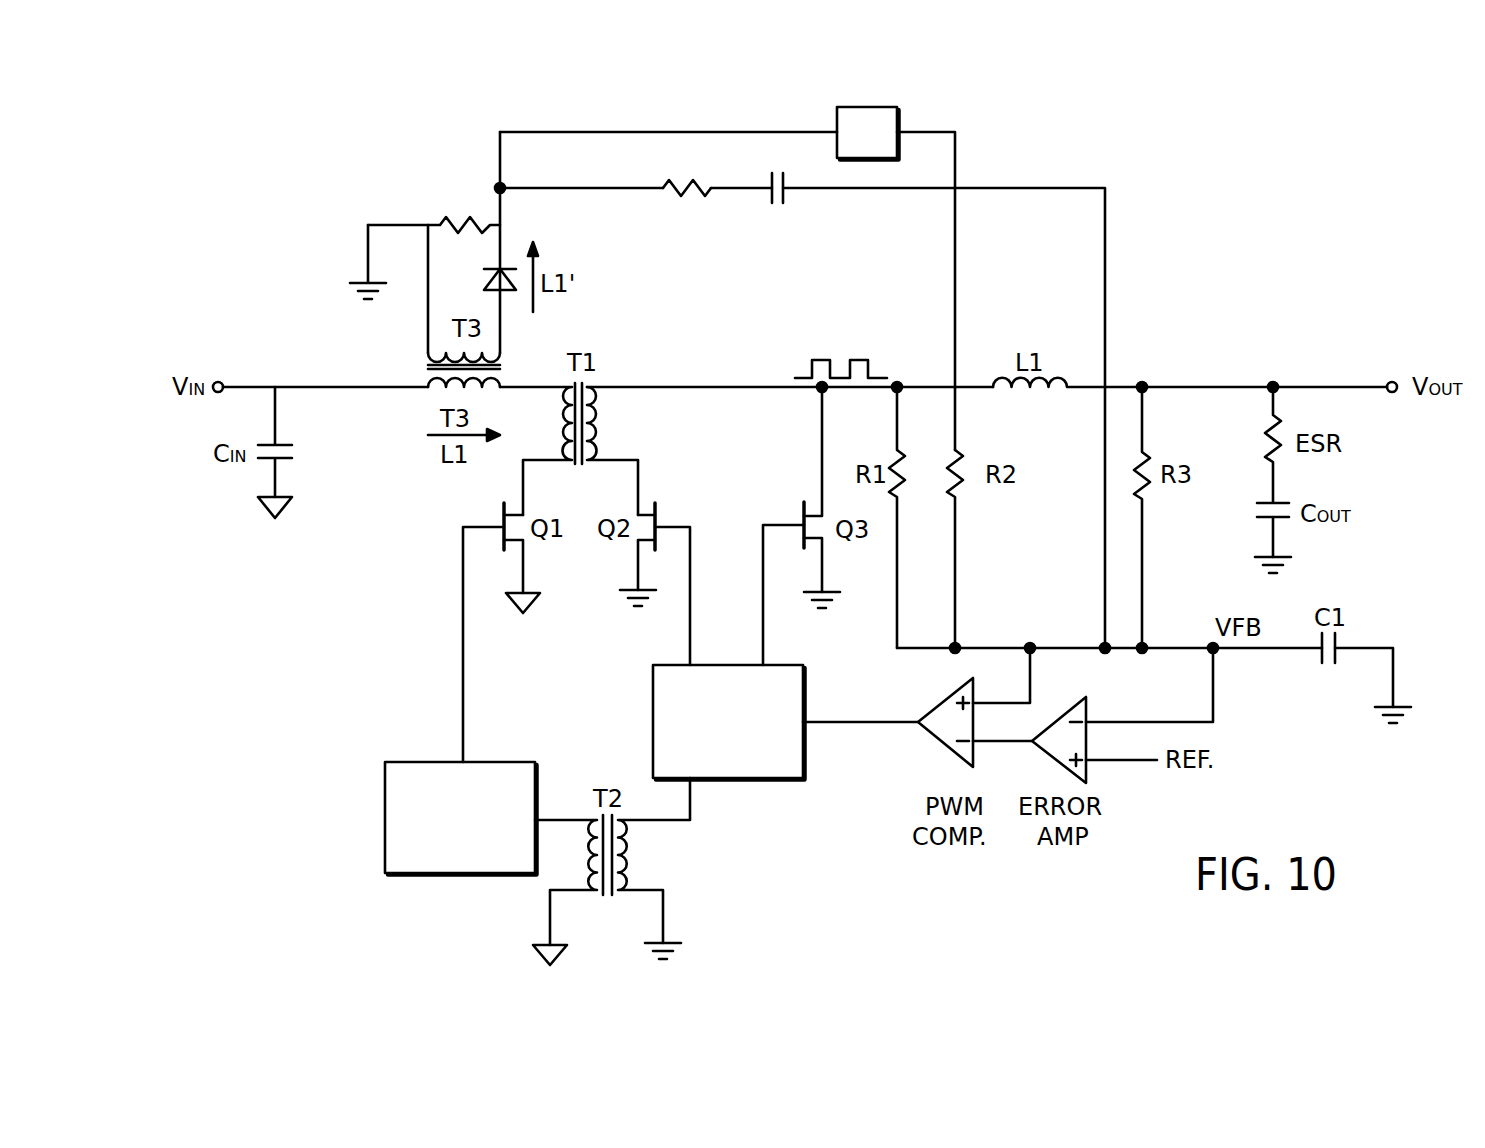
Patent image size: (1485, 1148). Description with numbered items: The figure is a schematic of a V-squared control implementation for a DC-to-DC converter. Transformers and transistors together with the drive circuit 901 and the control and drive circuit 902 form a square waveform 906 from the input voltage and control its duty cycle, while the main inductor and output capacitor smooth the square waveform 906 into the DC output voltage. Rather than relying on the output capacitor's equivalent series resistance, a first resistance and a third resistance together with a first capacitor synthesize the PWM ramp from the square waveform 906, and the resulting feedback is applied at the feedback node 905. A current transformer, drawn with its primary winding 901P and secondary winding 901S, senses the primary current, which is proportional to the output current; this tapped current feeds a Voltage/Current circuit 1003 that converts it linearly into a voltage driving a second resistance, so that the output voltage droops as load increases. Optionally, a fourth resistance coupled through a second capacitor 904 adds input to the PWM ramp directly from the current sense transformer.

The Voltage/Current (V/A) circuit 1003 is at (883, 106).
The control and drive circuit 902 is at (680, 178).
The capacitor C2 904 is at (772, 178).
The secondary winding of transformer T3 901S is at (496, 247).
The primary winding of transformer T3 901P is at (436, 391).
The square waveform 906 is at (894, 372).
The feedback node VFB 905 is at (1145, 660).
The drive circuit 901 is at (415, 877).